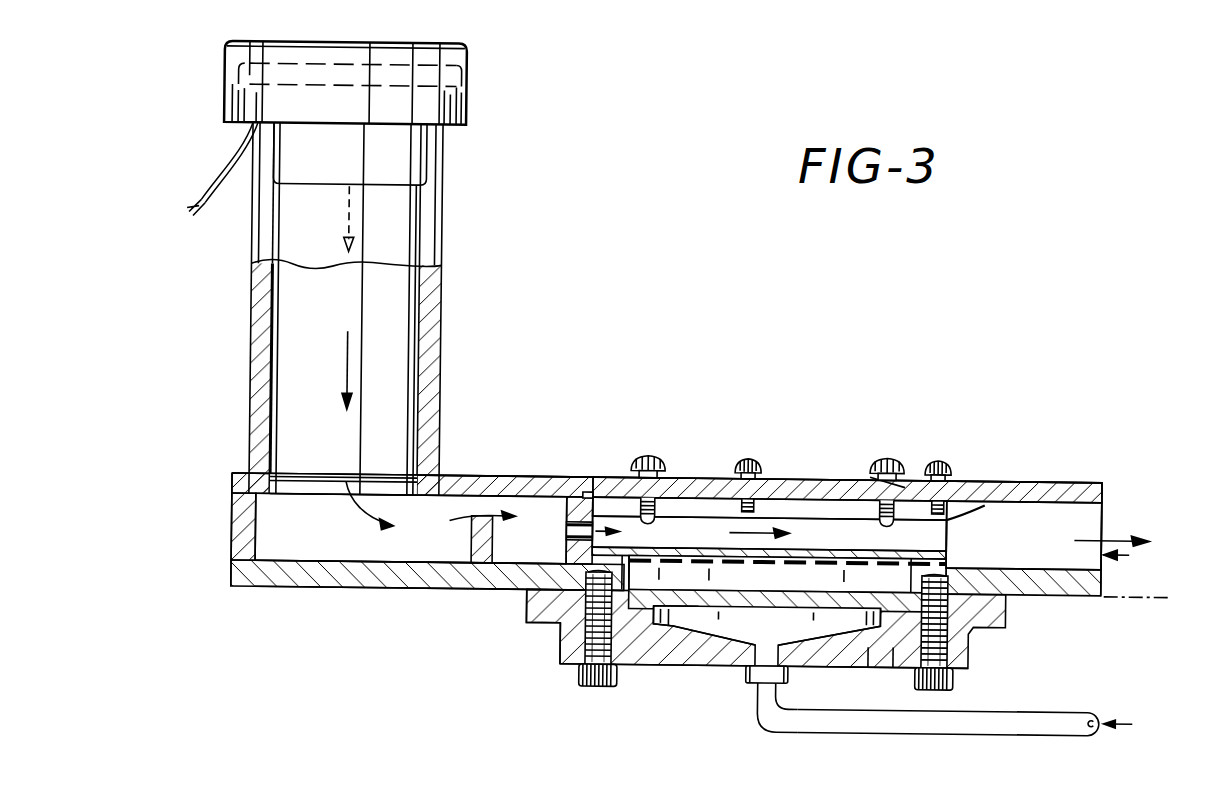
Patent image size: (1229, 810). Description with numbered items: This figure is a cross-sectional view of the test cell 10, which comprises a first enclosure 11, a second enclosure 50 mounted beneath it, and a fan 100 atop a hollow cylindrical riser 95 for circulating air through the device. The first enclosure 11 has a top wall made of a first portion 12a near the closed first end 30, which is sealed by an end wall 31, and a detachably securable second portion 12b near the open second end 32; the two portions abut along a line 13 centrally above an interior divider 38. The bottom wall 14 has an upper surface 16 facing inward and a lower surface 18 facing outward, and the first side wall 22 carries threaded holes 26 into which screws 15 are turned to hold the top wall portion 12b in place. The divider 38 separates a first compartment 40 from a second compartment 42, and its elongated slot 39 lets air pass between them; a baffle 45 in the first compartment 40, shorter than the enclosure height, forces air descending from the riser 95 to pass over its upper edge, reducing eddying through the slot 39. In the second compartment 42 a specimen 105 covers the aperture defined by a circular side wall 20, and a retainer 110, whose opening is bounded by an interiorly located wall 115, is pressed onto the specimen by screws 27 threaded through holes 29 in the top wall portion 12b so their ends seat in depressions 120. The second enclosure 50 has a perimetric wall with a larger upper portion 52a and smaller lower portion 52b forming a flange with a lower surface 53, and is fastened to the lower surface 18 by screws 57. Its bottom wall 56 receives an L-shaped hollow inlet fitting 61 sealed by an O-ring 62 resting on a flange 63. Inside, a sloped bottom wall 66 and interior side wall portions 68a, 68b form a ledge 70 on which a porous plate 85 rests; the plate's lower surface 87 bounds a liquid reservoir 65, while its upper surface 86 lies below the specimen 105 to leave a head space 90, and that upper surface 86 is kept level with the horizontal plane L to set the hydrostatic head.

The test cell 10 is at (681, 282).
The first enclosure 11 is at (1094, 470).
The first portion of top wall 12a is at (459, 474).
The second portion of top wall 12b is at (1053, 471).
The line 13 is at (589, 488).
The bottom wall 14 is at (279, 585).
The screws 15 is at (747, 451).
The upper surface of bottom wall 16 is at (359, 551).
The lower surface of bottom wall 18 is at (458, 587).
The circular side wall 20 is at (635, 562).
The first side wall 22 is at (1104, 490).
The threaded holes 26 is at (958, 497).
The screws 27 is at (650, 450).
The threaded holes 29 is at (871, 470).
The first end 30 is at (228, 500).
The end wall 31 is at (232, 537).
The second end 32 is at (1130, 545).
The divider 38 is at (561, 546).
The elongated slot 39 is at (552, 486).
The first compartment 40 is at (297, 542).
The second compartment 42 is at (1021, 542).
The baffle 45 is at (461, 548).
The second enclosure 50 is at (1010, 621).
The upper portion of perimetric wall 52a is at (531, 597).
The lower portion of perimetric wall 52b is at (572, 658).
The lower surface of annular flange 53 is at (562, 636).
The bottom wall of second enclosure 56 is at (810, 667).
The screws 57 is at (599, 684).
The inlet fitting 61 is at (1086, 698).
The O-ring 62 is at (749, 664).
The flange 63 is at (756, 681).
The reservoir 65 is at (830, 626).
The sloped interior bottom wall 66 is at (671, 621).
The upper portion of interior side wall 68a is at (900, 644).
The lower portion of interior side wall 68b is at (872, 633).
The circular ledge 70 is at (885, 600).
The porous plate 85 is at (812, 590).
The upper surface of porous plate 86 is at (729, 585).
The lower surface of porous plate 87 is at (673, 617).
The head space 90 is at (760, 585).
The riser 95 is at (439, 328).
The fan 100 is at (462, 88).
The specimen 105 is at (793, 554).
The retainer 110 is at (999, 471).
The interiorly located wall 115 is at (616, 486).
The circular depressions 120 is at (661, 555).
The horizontal plane L is at (1147, 597).